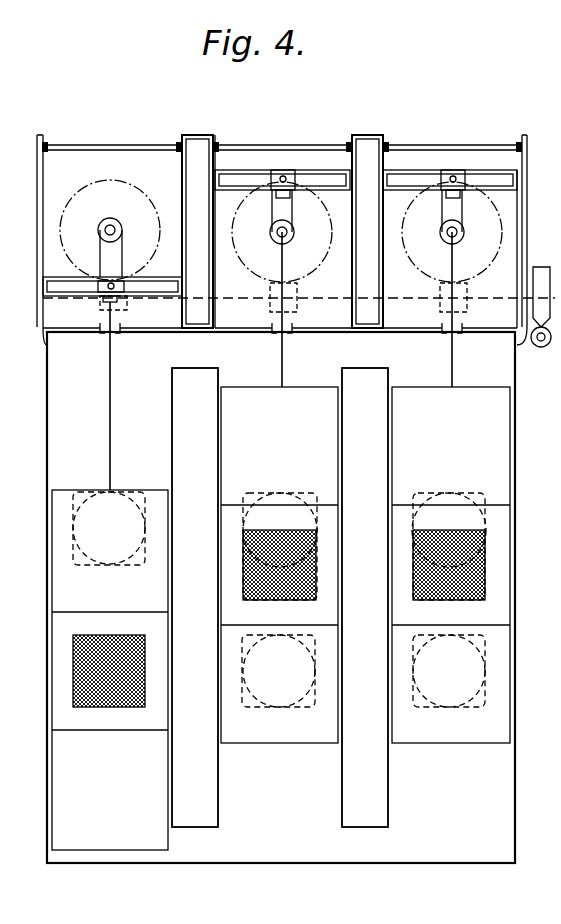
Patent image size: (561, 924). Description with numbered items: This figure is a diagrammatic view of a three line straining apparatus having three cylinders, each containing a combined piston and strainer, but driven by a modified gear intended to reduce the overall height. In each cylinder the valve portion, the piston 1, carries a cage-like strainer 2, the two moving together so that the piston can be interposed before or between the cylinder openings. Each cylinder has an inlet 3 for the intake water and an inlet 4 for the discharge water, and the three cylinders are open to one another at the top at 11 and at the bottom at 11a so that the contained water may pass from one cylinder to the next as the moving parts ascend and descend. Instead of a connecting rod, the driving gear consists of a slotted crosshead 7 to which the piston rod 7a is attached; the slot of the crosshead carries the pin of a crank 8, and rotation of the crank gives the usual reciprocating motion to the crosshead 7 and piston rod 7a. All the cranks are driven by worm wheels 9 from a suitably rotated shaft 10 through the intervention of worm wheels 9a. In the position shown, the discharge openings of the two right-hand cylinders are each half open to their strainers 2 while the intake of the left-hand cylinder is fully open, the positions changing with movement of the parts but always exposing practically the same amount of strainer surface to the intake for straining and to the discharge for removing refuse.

The piston 1 is at (281, 618).
The strainer 2 is at (146, 686).
The inlet 3 is at (82, 707).
The inlet 4 is at (85, 500).
The slotted crosshead 7 is at (160, 292).
The piston rod 7a is at (285, 266).
The crank 8 is at (115, 250).
The worm wheel 9 is at (82, 192).
The worm wheel 9a is at (100, 305).
The shaft 10 is at (240, 300).
The top opening between cylinders 11 is at (280, 586).
The bottom opening between cylinders 11a is at (280, 499).